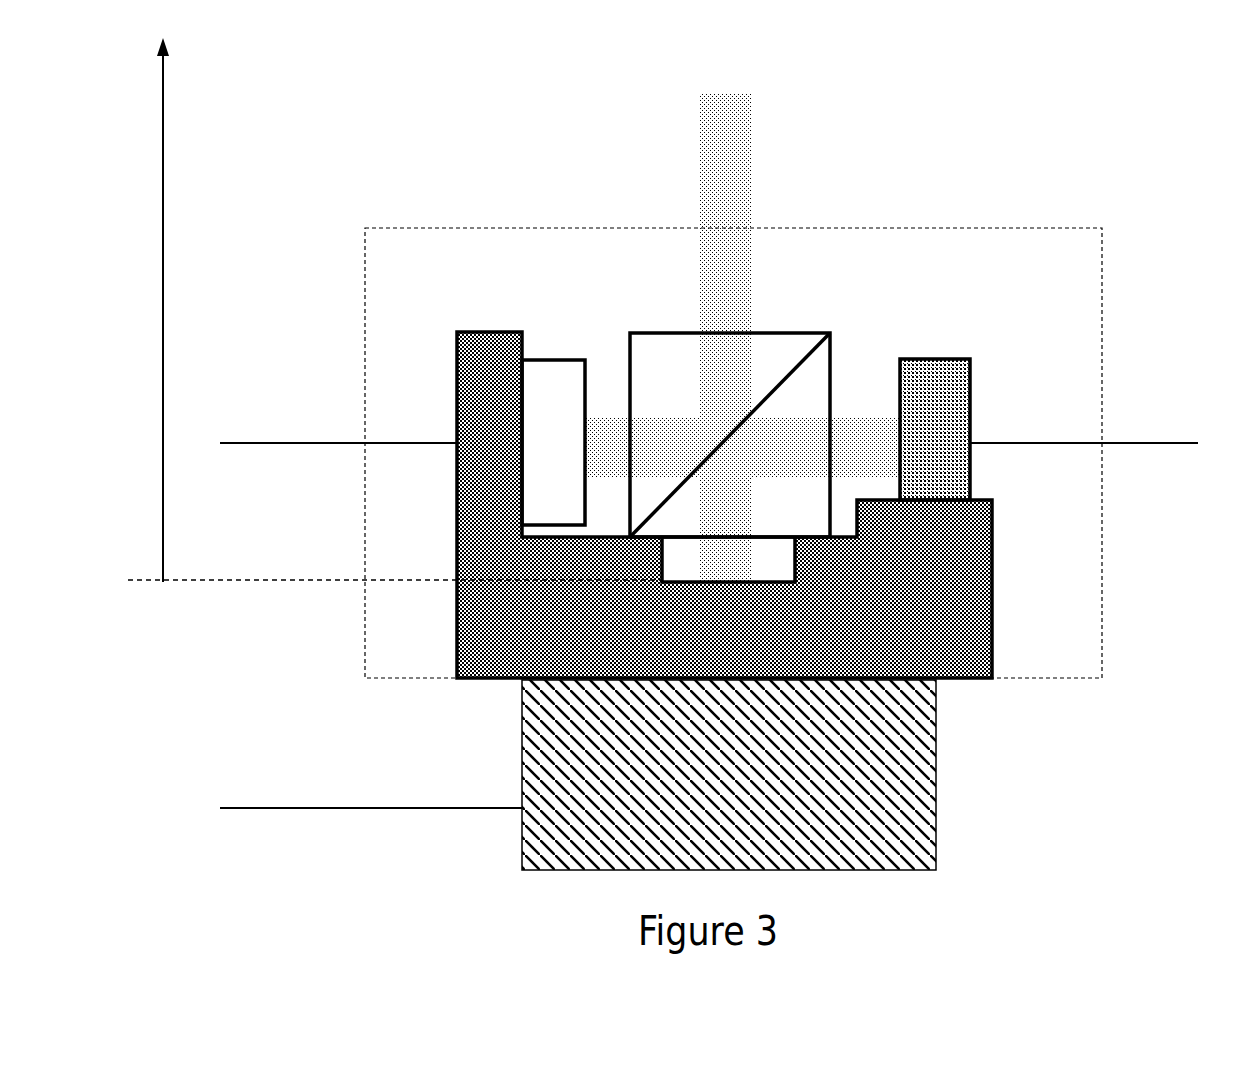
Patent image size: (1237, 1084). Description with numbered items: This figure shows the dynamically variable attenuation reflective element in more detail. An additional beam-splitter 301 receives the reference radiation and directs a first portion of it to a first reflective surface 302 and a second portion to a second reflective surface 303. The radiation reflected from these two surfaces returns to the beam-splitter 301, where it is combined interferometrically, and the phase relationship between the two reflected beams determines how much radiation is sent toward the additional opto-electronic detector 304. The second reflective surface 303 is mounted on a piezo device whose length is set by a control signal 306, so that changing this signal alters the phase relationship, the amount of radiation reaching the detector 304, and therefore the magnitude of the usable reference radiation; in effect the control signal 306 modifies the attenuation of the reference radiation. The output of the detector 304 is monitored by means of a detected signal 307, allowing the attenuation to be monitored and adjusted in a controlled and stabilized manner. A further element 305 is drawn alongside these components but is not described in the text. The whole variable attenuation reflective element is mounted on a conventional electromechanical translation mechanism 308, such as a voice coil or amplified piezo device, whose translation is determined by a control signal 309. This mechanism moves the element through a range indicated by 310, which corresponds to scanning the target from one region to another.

The beam-splitter 301 is at (668, 322).
The first reflective surface 302 is at (774, 570).
The second reflective surface 303 is at (598, 378).
The additional opto-electronic detector 304 is at (935, 348).
The optical element 305 is at (553, 340).
The control signal 306 is at (312, 434).
The detected signal 307 is at (1163, 440).
The electromechanical translation mechanism 308 is at (942, 752).
The control signal 309 is at (310, 796).
The range 310 is at (170, 96).